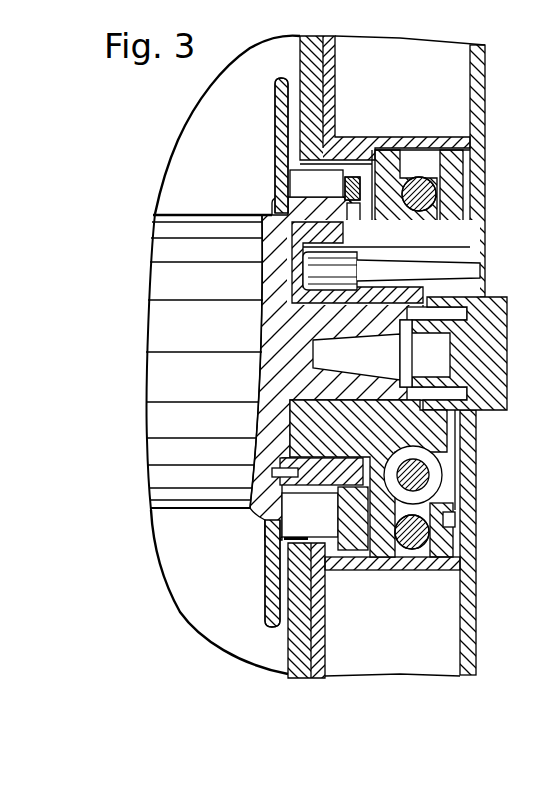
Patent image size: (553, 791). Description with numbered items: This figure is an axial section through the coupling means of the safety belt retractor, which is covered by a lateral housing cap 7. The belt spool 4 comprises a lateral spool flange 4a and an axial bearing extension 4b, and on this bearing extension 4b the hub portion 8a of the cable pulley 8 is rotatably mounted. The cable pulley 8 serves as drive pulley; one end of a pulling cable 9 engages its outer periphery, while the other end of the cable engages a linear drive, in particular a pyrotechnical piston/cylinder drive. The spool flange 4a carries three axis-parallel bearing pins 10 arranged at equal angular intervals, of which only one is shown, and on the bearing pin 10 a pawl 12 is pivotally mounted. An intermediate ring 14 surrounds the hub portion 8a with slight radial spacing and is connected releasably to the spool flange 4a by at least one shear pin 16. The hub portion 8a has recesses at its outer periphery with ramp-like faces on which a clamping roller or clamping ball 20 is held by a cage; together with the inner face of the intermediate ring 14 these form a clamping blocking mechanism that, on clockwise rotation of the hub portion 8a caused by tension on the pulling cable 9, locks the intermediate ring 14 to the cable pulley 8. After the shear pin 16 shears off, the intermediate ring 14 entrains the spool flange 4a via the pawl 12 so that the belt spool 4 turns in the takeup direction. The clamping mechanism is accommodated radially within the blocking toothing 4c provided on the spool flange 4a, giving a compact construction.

The belt spool 4 is at (208, 226).
The spool flange 4a is at (274, 612).
The axial bearing extension 4b is at (390, 317).
The blocking toothing 4c is at (332, 570).
The lateral housing cap 7 is at (481, 172).
The cable pulley 8 is at (445, 547).
The hub portion 8a is at (390, 430).
The pulling cable 9 is at (455, 520).
The bearing pin 10 is at (357, 217).
The pawl 12 is at (357, 177).
The intermediate ring 14 is at (268, 512).
The shear pin 16 is at (270, 478).
The clamping roller or clamping ball 20 is at (350, 265).